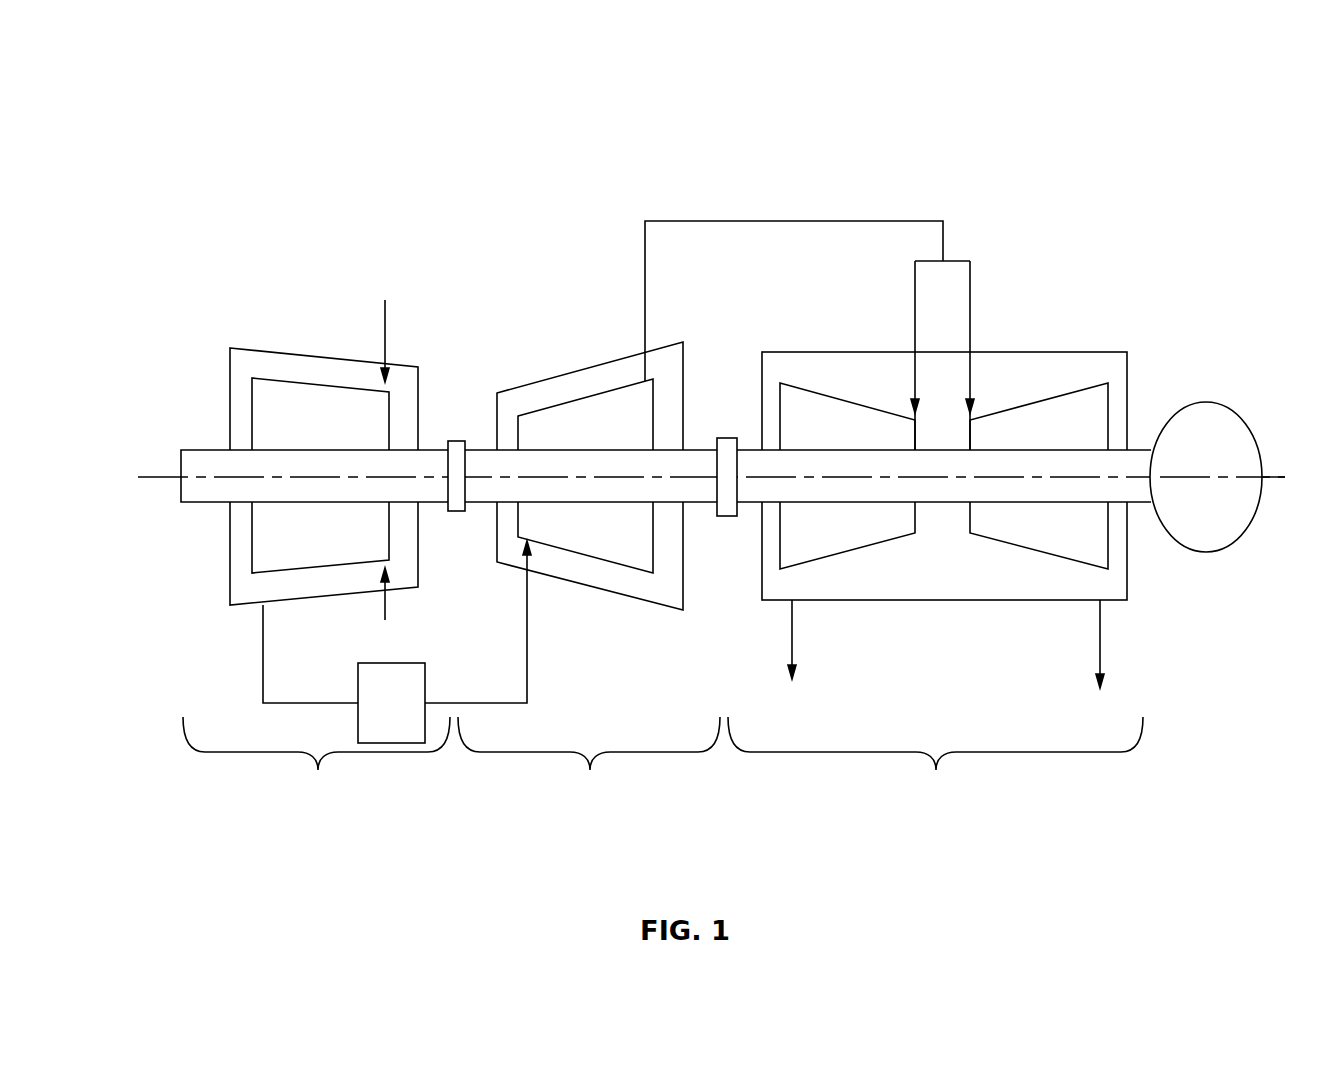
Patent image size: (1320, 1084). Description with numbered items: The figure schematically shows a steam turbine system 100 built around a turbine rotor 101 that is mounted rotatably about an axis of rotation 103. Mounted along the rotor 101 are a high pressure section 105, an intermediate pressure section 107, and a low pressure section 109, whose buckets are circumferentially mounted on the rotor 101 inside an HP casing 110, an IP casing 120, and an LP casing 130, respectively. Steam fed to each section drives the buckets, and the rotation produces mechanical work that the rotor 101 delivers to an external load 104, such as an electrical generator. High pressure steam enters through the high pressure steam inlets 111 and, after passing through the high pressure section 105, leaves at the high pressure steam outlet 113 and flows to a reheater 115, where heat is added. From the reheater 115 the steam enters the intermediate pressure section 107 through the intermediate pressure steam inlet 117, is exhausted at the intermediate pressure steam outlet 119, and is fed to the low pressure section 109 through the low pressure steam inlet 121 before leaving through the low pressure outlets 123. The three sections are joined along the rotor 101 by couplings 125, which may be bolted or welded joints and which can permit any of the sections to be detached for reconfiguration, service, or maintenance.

The steam turbine system 100 is at (499, 144).
The turbine rotor 101 is at (428, 462).
The axis of rotation 103 is at (162, 475).
The external load 104 is at (1205, 422).
The high pressure section 105 is at (318, 770).
The intermediate pressure section 107 is at (590, 770).
The low pressure section 109 is at (936, 770).
The HP casing 110 is at (267, 368).
The high pressure steam inlets 111 is at (385, 310).
The high pressure steam outlet 113 is at (262, 662).
The reheater 115 is at (400, 680).
The intermediate pressure steam inlet 117 is at (528, 600).
The intermediate pressure steam outlet 119 is at (645, 305).
The IP casing 120 is at (535, 395).
The low pressure steam inlet 121 is at (913, 328).
The low pressure outlets 123 is at (788, 652).
The couplings 125 is at (455, 512).
The LP casing 130 is at (1044, 378).